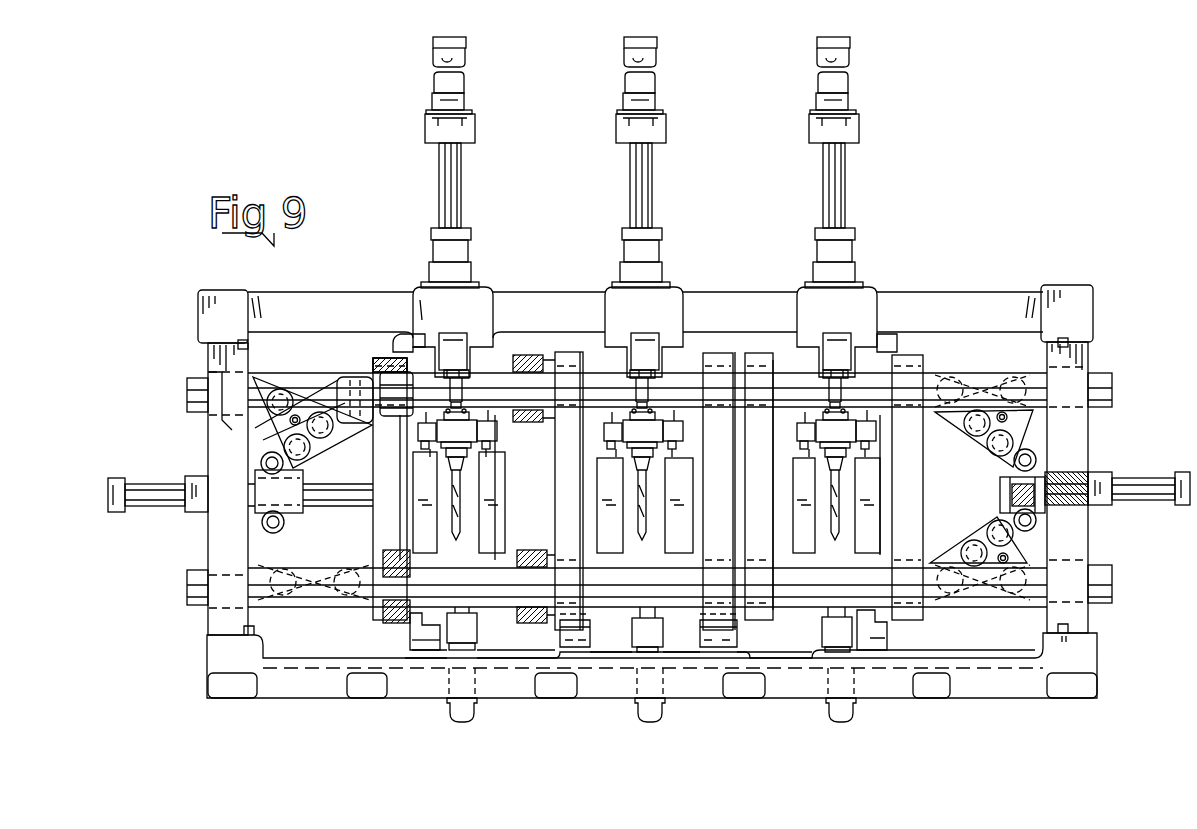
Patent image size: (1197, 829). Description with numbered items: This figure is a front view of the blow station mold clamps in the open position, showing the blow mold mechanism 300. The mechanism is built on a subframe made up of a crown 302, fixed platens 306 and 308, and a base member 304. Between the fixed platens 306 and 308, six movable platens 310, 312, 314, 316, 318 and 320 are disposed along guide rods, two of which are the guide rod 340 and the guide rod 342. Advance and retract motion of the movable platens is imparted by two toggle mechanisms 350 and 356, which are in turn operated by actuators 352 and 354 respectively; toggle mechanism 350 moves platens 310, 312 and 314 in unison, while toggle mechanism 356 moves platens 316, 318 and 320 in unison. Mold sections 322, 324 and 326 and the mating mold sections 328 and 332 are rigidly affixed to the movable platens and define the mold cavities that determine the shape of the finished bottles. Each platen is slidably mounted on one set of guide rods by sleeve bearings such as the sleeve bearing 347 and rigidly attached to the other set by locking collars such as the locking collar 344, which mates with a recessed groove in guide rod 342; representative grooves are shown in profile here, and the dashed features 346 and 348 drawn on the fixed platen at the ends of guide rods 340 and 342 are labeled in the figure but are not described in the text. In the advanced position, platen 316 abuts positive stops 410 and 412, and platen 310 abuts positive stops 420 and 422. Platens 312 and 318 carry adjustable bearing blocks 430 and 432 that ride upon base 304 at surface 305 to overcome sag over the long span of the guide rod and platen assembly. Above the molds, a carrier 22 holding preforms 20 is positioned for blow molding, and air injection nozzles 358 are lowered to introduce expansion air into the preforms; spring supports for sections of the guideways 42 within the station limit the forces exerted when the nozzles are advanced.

The blow mold mechanism 300 is at (934, 250).
The crown 302 is at (1080, 285).
The base member 304 is at (1097, 662).
The surface 305 is at (626, 643).
The fixed platen 306 is at (1088, 350).
The fixed platen 308 is at (205, 360).
The movable platen 310 is at (923, 360).
The movable platen 312 is at (700, 345).
The movable platen 314 is at (508, 345).
The movable platen 316 is at (378, 360).
The movable platen 318 is at (571, 483).
The movable platen 320 is at (760, 478).
The mold section 322 is at (851, 555).
The mold section 324 is at (662, 556).
The mold section 326 is at (503, 557).
The mating mold section 328 is at (421, 555).
The mating mold section 332 is at (630, 557).
The guide rod 340 is at (1112, 386).
The guide rod 342 is at (1112, 582).
The locking collar 344 is at (405, 626).
The upper shaft pin 346 is at (1088, 367).
The sleeve bearing 347 is at (404, 372).
The lower shaft pin 348 is at (1088, 560).
The toggle mechanism 350 is at (1007, 372).
The actuator 352 is at (1130, 472).
The actuator 354 is at (176, 480).
The toggle mechanism 356 is at (305, 376).
The air injection nozzle 358 is at (406, 406).
The positive stop 410 is at (410, 640).
The positive stop 412 is at (412, 343).
The positive stop 420 is at (887, 634).
The positive stop 422 is at (887, 343).
The adjustable bearing block 430 is at (740, 632).
The adjustable bearing block 432 is at (560, 632).
The preform 20 is at (457, 538).
The carrier 22 is at (439, 420).
The guideway 42 is at (430, 441).